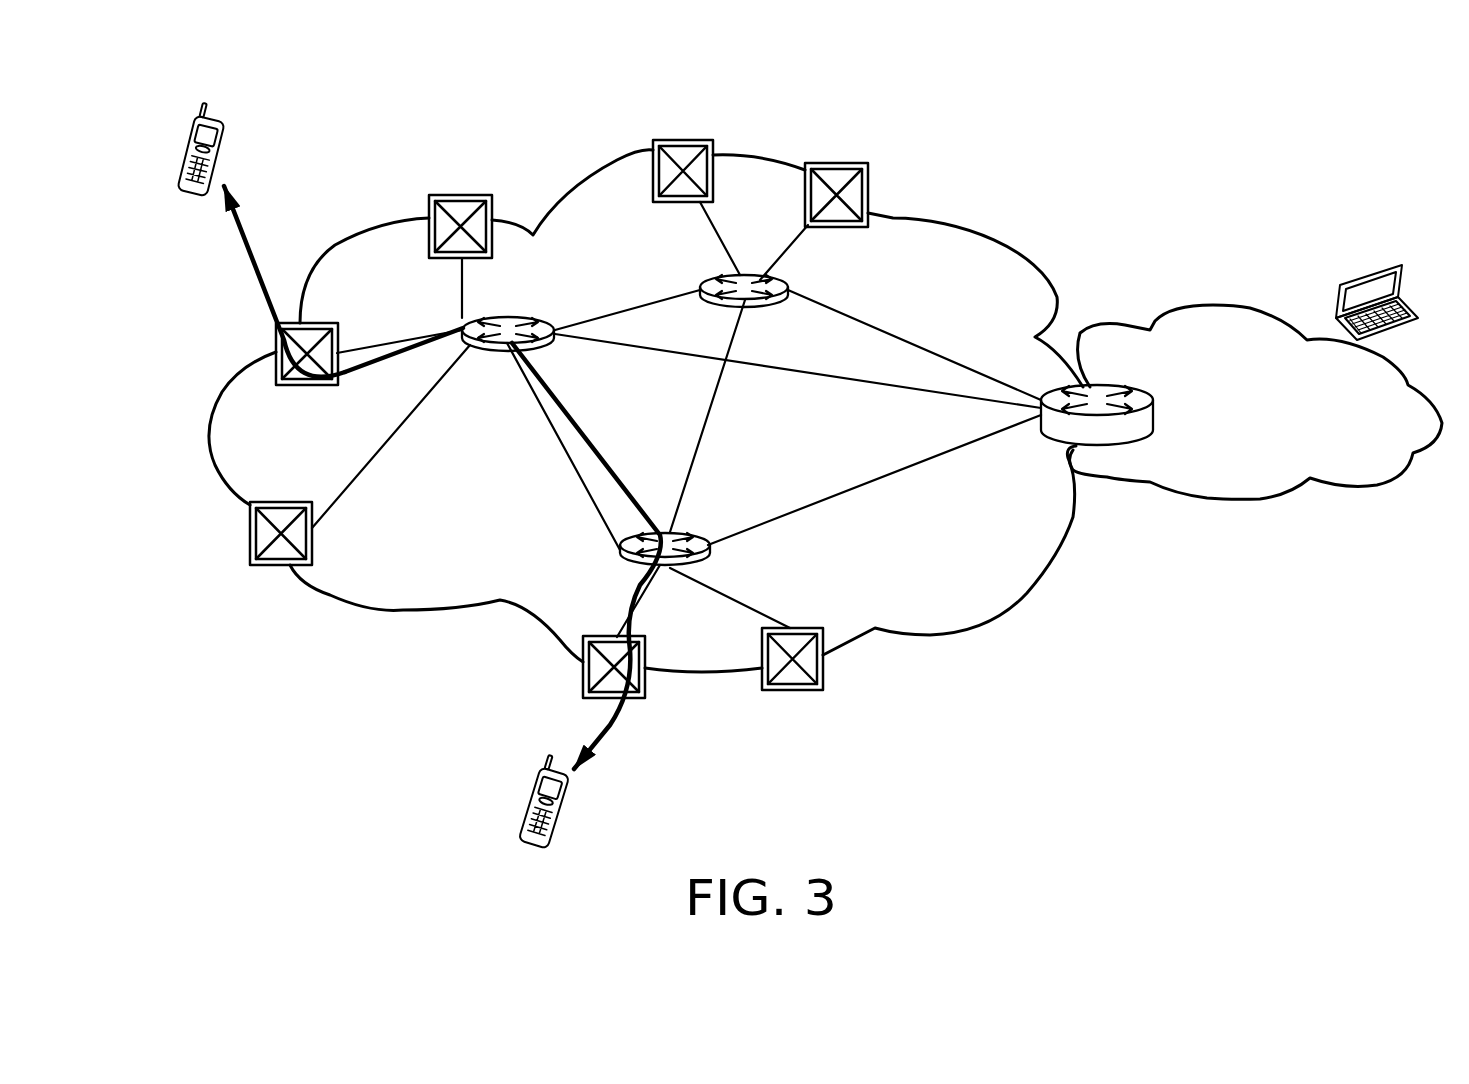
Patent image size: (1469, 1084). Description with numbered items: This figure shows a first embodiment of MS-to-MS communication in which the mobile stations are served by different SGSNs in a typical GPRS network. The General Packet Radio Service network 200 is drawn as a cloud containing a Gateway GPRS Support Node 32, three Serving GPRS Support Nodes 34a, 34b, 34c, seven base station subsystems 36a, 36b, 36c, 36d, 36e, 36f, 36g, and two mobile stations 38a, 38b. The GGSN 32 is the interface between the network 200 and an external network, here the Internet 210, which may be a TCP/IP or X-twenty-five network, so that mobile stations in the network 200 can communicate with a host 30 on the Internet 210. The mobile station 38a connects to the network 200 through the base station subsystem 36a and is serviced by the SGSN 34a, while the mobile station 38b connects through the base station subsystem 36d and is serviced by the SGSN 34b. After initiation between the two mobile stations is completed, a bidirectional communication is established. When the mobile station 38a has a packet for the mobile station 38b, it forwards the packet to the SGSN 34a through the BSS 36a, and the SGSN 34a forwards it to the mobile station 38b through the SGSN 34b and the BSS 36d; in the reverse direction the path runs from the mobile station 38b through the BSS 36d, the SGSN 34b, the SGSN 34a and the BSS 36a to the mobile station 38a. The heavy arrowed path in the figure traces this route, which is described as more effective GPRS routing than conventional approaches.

The GPRS network 200 is at (388, 612).
The Internet 210 is at (1228, 498).
The host 30 is at (1401, 302).
The Gateway GPRS Support Node (GGSN) 32 is at (1060, 443).
The Serving GPRS Support Node (SGSN) 34a is at (518, 304).
The Serving GPRS Support Node (SGSN) 34b is at (709, 567).
The Serving GPRS Support Node (SGSN) 34c is at (787, 275).
The base station subsystem (BSS) 36a is at (272, 341).
The base station subsystem (BSS) 36b is at (460, 194).
The base station subsystem (BSS) 36c is at (249, 534).
The base station subsystem (BSS) 36d is at (581, 677).
The base station subsystem (BSS) 36e is at (792, 691).
The base station subsystem (BSS) 36f is at (683, 140).
The base station subsystem (BSS) 36g is at (836, 162).
The mobile station (MS) 38a is at (174, 153).
The mobile station (MS) 38b is at (517, 804).